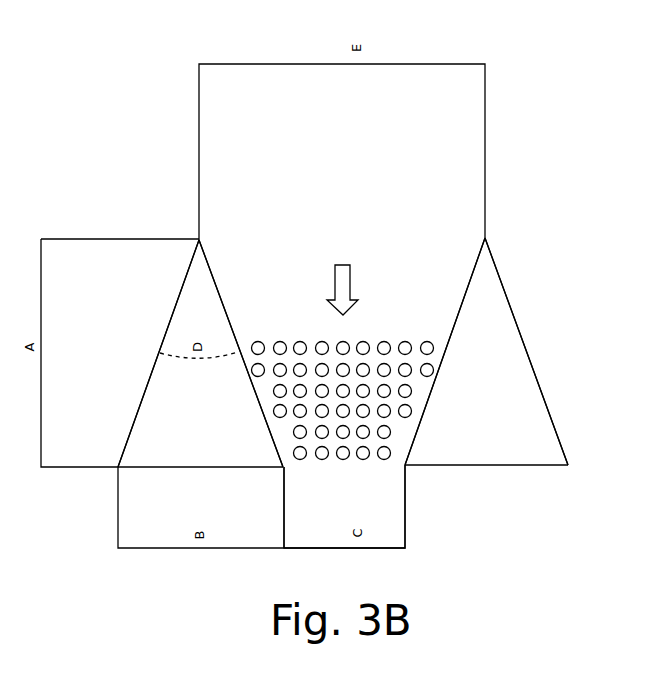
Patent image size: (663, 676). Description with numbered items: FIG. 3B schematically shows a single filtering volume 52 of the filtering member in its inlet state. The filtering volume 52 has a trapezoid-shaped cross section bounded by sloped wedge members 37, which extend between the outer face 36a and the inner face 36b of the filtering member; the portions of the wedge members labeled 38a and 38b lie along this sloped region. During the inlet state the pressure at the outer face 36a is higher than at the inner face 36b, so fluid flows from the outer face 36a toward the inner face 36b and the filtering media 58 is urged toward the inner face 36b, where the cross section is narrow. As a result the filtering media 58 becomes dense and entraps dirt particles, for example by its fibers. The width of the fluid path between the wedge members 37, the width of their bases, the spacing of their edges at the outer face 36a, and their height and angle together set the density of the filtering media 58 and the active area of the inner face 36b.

The outer face 36a is at (310, 227).
The inner face 36b is at (360, 470).
The wedge member 37 is at (215, 420).
The inner deflector surface 38a is at (213, 275).
The outer deflector surface 38b is at (176, 303).
The filtering volume 52 is at (377, 310).
The filtering media 58 is at (336, 420).